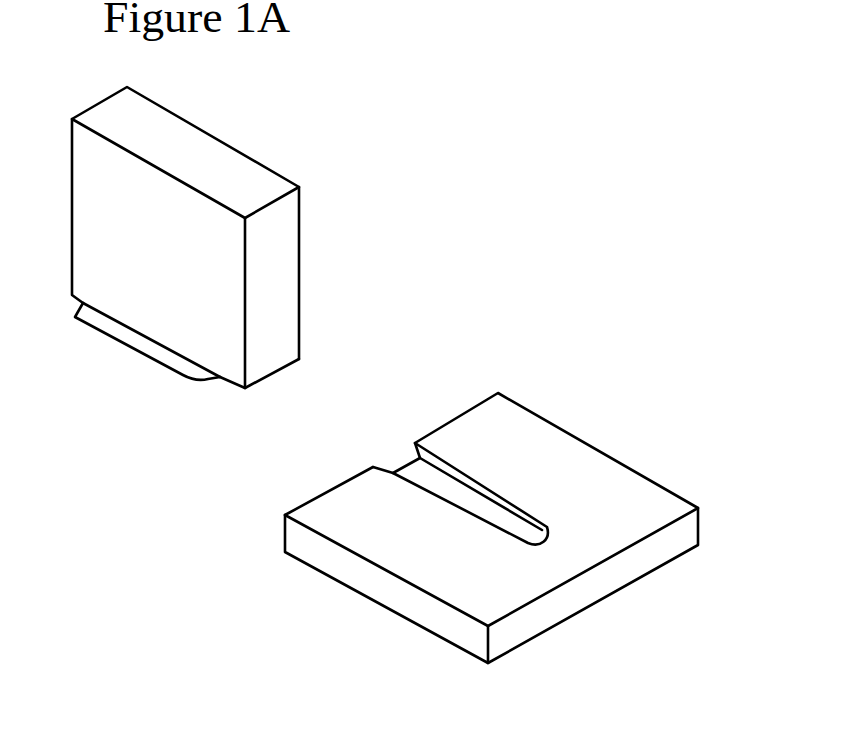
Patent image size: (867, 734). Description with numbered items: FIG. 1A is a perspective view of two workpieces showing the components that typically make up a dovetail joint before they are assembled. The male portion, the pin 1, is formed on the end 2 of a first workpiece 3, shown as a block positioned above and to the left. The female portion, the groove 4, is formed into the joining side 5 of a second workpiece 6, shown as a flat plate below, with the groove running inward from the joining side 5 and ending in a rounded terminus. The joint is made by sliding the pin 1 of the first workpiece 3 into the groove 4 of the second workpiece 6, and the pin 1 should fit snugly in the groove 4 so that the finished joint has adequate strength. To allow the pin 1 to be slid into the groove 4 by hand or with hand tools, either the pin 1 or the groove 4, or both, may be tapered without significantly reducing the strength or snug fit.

The pin 1 is at (147, 347).
The end 2 is at (283, 368).
The first workpiece 3 is at (279, 283).
The groove 4 is at (395, 445).
The joining side 5 is at (550, 442).
The second workpiece 6 is at (498, 496).